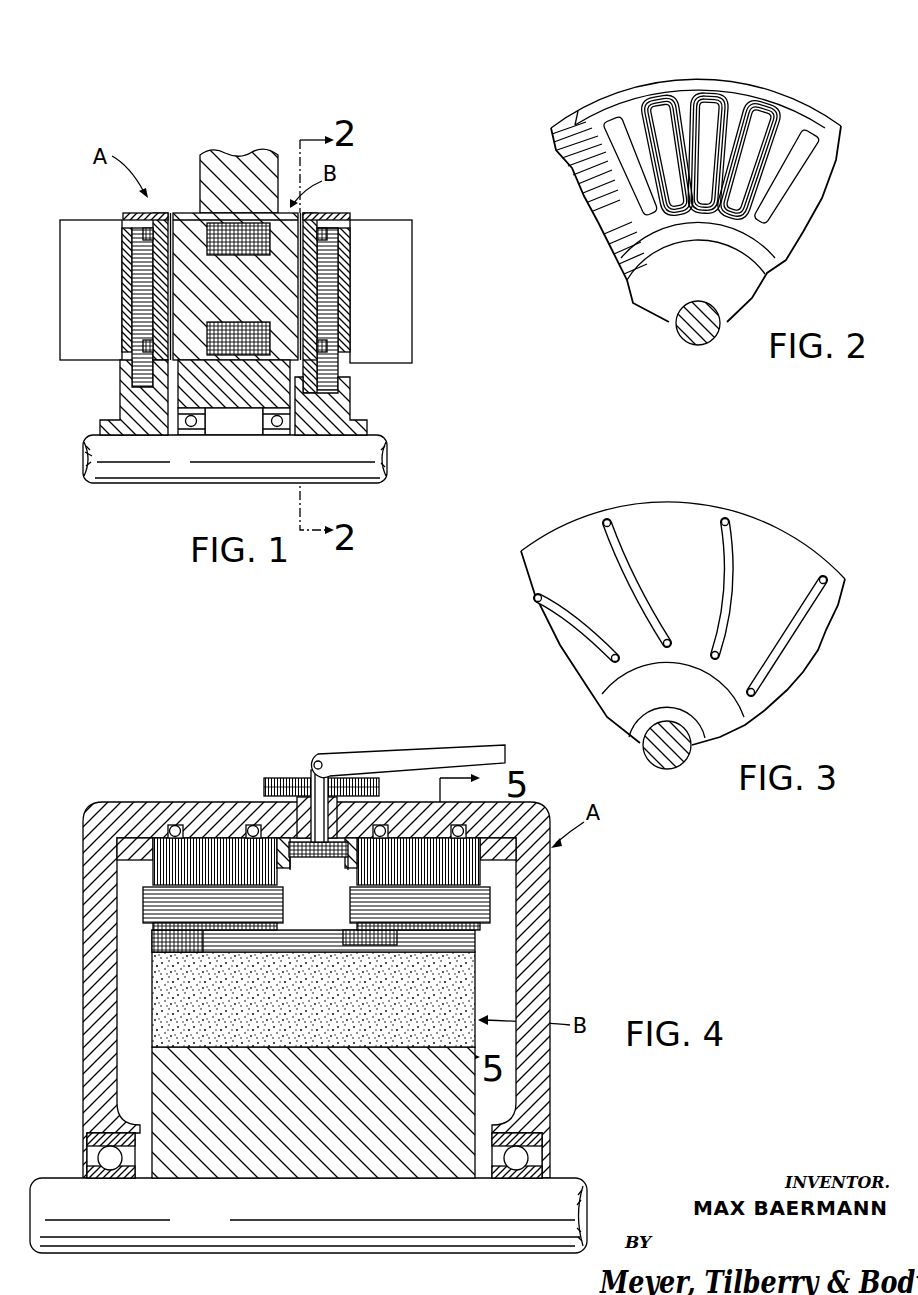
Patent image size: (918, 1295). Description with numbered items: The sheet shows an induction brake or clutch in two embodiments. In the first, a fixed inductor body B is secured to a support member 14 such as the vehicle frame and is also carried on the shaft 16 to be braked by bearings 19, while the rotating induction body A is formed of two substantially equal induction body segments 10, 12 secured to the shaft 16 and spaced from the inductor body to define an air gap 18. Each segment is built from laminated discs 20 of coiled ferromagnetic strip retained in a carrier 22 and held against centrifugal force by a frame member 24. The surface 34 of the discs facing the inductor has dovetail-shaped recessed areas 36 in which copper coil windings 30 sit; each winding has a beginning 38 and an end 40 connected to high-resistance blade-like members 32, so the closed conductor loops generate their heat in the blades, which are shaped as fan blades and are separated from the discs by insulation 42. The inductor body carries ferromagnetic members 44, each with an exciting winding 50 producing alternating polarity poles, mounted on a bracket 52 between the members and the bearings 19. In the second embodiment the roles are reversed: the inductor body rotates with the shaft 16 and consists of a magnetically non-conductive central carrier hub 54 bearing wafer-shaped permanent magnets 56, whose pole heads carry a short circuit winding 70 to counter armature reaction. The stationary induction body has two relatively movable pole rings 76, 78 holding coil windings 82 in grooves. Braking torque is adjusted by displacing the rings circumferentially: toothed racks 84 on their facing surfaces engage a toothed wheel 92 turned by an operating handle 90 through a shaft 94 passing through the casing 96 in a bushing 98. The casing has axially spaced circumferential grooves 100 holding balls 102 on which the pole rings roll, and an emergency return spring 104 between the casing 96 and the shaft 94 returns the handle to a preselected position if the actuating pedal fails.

In FIG. 1, the induction body segment 10 is at (108, 394).
In FIG. 1, the induction body segment 12 is at (362, 384).
In FIG. 1, the support member 14 is at (228, 165).
In FIG. 1, the shaft 16 is at (365, 473).
In FIG. 2, the shaft 16 is at (700, 336).
In FIG. 3, the shaft 16 is at (677, 767).
In FIG. 4, the shaft 16 is at (356, 1236).
In FIG. 1, the air gap 18 is at (171, 213).
In FIG. 4, the air gap 18 is at (358, 931).
In FIG. 1, the bearings 19 is at (192, 428).
In FIG. 4, the bearings 19 is at (95, 1144).
In FIG. 1, the laminated discs 20 is at (143, 240).
In FIG. 2, the laminated discs 20 is at (600, 224).
In FIG. 1, the carrier 22 is at (122, 410).
In FIG. 2, the carrier 22 is at (650, 296).
In FIG. 3, the carrier 22 is at (618, 711).
In FIG. 1, the frame member 24 is at (160, 213).
In FIG. 2, the frame member 24 is at (599, 88).
In FIG. 1, the coil windings 30 is at (155, 233).
In FIG. 2, the coil windings 30 is at (720, 143).
In FIG. 1, the blade-like members 32 is at (403, 329).
In FIG. 3, the blade-like members 32 is at (726, 557).
In FIG. 1, the surface of the laminated discs 34 is at (155, 291).
In FIG. 2, the surface of the laminated discs 34 is at (669, 124).
In FIG. 2, the recessed area 36 is at (734, 122).
In FIG. 1, the beginning of coil winding 38 is at (320, 236).
In FIG. 1, the end of coil winding 40 is at (313, 364).
In FIG. 1, the insulation 42 is at (125, 330).
In FIG. 3, the insulation 42 is at (688, 506).
In FIG. 1, the ferromagnetic members 44 is at (281, 230).
In FIG. 1, the exciting winding 50 is at (220, 353).
In FIG. 1, the bracket 52 is at (270, 370).
In FIG. 4, the central carrier hub 54 is at (466, 1089).
In FIG. 4, the permanent magnets 56 is at (468, 989).
In FIG. 4, the short circuit winding 70 is at (474, 946).
In FIG. 4, the pole ring 76 is at (430, 840).
In FIG. 4, the pole ring 78 is at (216, 838).
In FIG. 4, the coil windings 82 is at (153, 911).
In FIG. 4, the toothed racks 84 is at (320, 857).
In FIG. 4, the operating handle 90 is at (418, 753).
In FIG. 4, the toothed wheel 92 is at (320, 860).
In FIG. 4, the shaft 94 is at (315, 785).
In FIG. 4, the casing 96 is at (541, 906).
In FIG. 4, the bushing 98 is at (300, 815).
In FIG. 4, the circumferential grooves 100 is at (250, 826).
In FIG. 4, the balls 102 is at (175, 826).
In FIG. 4, the emergency return spring 104 is at (366, 788).